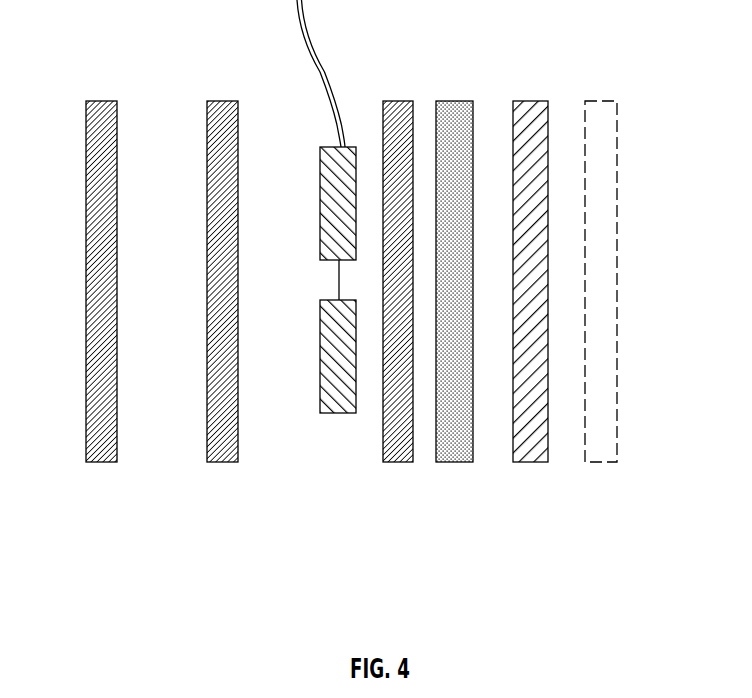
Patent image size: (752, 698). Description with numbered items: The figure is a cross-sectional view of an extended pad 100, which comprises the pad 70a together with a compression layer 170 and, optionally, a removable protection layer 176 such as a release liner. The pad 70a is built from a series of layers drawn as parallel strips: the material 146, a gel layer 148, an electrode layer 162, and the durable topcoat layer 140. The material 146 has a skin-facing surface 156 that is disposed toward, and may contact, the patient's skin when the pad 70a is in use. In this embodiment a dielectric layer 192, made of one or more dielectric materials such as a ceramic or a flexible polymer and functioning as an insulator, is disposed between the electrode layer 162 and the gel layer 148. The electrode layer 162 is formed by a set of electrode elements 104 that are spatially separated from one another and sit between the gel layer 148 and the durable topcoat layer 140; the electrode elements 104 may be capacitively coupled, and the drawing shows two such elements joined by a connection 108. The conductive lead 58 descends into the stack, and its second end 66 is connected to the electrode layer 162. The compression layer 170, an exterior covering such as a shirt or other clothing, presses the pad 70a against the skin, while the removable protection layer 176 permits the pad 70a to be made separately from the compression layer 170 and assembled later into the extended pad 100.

The conductive lead 58 is at (318, 70).
The second end of the conductive lead 66 is at (342, 146).
The extended pad 100 is at (369, 51).
The electrode element 104 is at (320, 203).
The connecting wire between electrode segments 108 is at (338, 297).
The electrode layer 162 is at (334, 429).
The compression layer 170 is at (98, 462).
The durable topcoat layer 140 is at (223, 462).
The dielectric layer 192 is at (397, 462).
The material 146 is at (450, 462).
The gel layer 148 is at (530, 462).
The skin-facing surface 156 is at (483, 112).
The removable protection layer 176 is at (600, 462).
The pad 70a is at (591, 547).